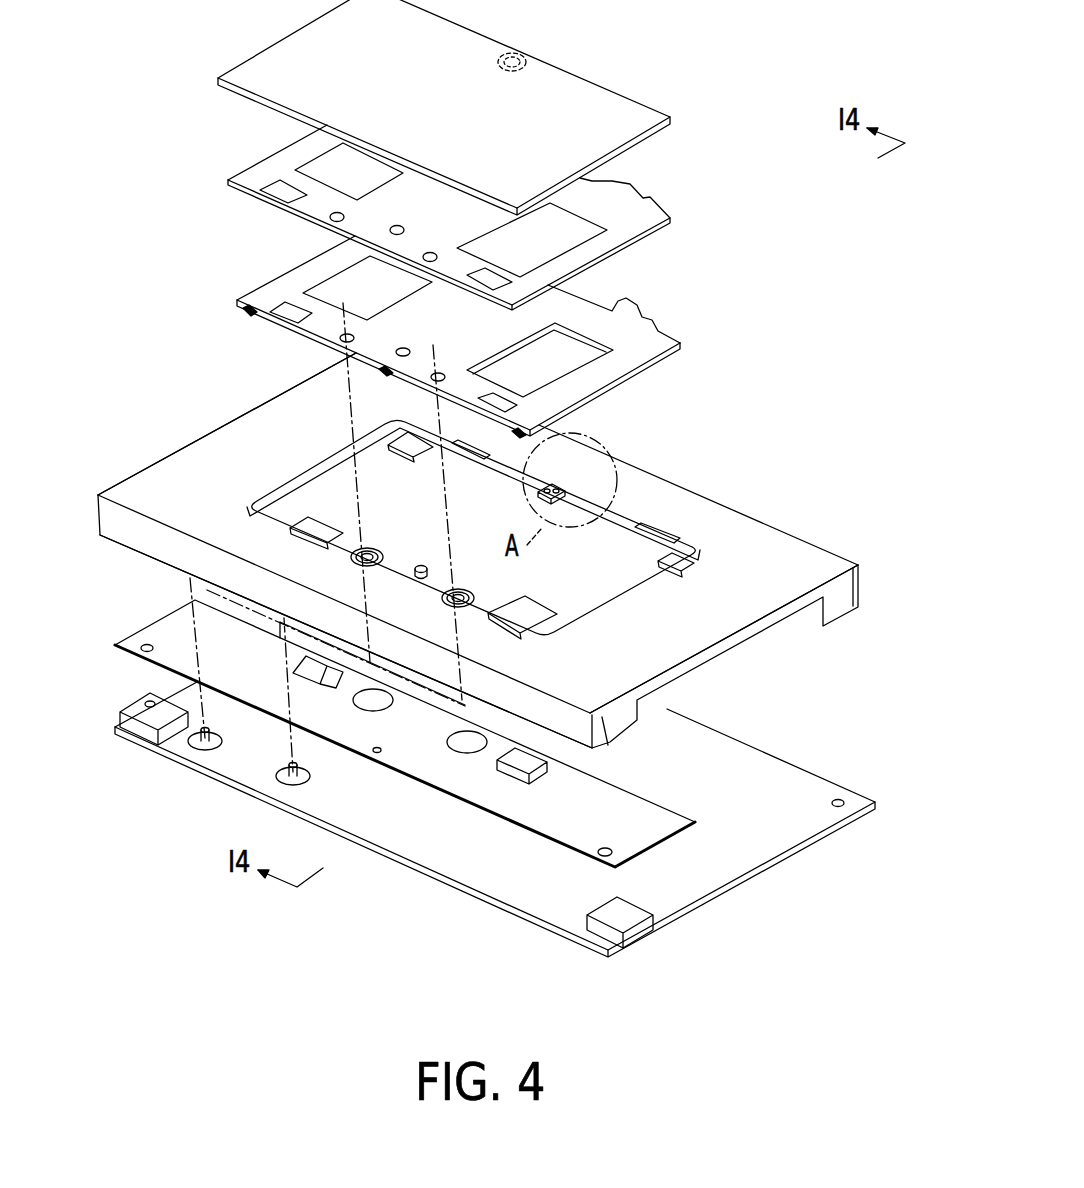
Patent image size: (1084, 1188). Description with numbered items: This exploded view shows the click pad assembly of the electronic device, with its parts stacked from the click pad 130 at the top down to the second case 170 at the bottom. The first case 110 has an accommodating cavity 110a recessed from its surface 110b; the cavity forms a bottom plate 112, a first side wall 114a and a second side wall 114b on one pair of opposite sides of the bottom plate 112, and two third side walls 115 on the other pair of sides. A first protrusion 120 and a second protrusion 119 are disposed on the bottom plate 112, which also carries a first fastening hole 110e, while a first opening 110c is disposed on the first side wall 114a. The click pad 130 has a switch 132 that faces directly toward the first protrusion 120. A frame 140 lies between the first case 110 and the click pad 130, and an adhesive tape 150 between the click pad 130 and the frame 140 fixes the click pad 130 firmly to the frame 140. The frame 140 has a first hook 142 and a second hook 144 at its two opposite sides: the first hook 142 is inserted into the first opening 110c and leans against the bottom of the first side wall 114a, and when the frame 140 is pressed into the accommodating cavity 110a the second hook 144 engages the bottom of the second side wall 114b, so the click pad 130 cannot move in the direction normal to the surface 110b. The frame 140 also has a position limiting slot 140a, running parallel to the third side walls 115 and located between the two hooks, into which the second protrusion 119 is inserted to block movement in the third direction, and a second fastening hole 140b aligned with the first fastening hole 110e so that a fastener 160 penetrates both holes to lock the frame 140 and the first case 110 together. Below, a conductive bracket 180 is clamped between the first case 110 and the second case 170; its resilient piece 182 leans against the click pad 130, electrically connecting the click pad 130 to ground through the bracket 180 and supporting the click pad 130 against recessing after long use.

The first case 110 is at (855, 545).
The accommodating cavity 110a is at (290, 508).
The surface 110b is at (191, 490).
The first opening 110c is at (478, 458).
The first fastening hole 110e is at (368, 560).
The bottom plate 112 is at (570, 605).
The first side wall 114a is at (685, 553).
The second side wall 114b is at (483, 605).
The third side walls 115 is at (330, 462).
The second protrusion 119 is at (422, 565).
The first protrusion 120 is at (547, 495).
The click pad 130 is at (633, 107).
The switch 132 is at (527, 54).
The frame 140 is at (682, 343).
The position limiting slot 140a is at (403, 343).
The second fastening hole 140b is at (343, 337).
The first hook 142 is at (640, 313).
The second hook 144 is at (245, 305).
The adhesive tape 150 is at (650, 218).
The fastener 160 is at (200, 746).
The second case 170 is at (773, 832).
The bracket 180 is at (630, 828).
The resilient piece 182 is at (505, 762).